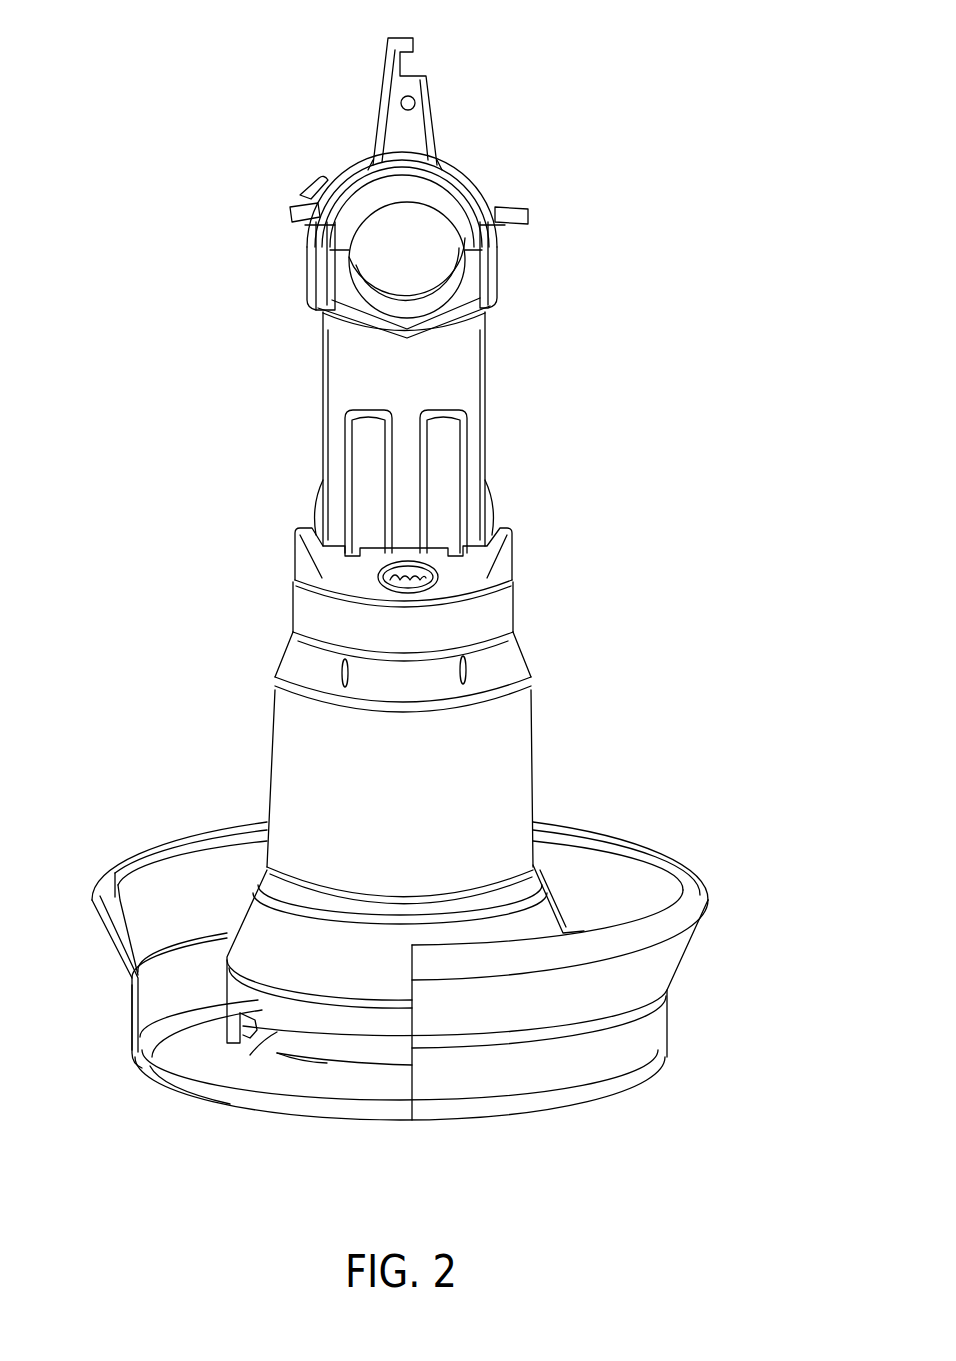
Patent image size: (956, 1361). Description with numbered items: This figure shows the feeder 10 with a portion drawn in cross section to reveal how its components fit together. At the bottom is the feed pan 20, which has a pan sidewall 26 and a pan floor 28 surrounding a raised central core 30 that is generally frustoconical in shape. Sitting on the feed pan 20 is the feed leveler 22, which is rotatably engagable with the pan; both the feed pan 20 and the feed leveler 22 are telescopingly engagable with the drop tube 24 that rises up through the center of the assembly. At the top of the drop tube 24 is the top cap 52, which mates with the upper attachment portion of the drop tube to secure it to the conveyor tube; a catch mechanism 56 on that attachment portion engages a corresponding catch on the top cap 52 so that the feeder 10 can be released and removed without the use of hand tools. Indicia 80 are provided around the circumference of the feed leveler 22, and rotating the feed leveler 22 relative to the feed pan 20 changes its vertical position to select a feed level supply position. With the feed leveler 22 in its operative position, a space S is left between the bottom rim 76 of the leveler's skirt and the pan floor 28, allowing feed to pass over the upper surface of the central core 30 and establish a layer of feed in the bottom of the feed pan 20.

The feeder 10 is at (735, 750).
The feed pan 20 is at (677, 968).
The feed leveler 22 is at (532, 725).
The drop tube 24 is at (487, 372).
The pan sidewall 26 is at (132, 1010).
The pan floor 28 is at (200, 1103).
The central core 30 is at (327, 1063).
The top cap 52 is at (480, 173).
The catch mechanism 56 is at (428, 80).
The bottom rim 76 is at (248, 1028).
The indicia 80 is at (474, 668).
The space S is at (263, 1050).